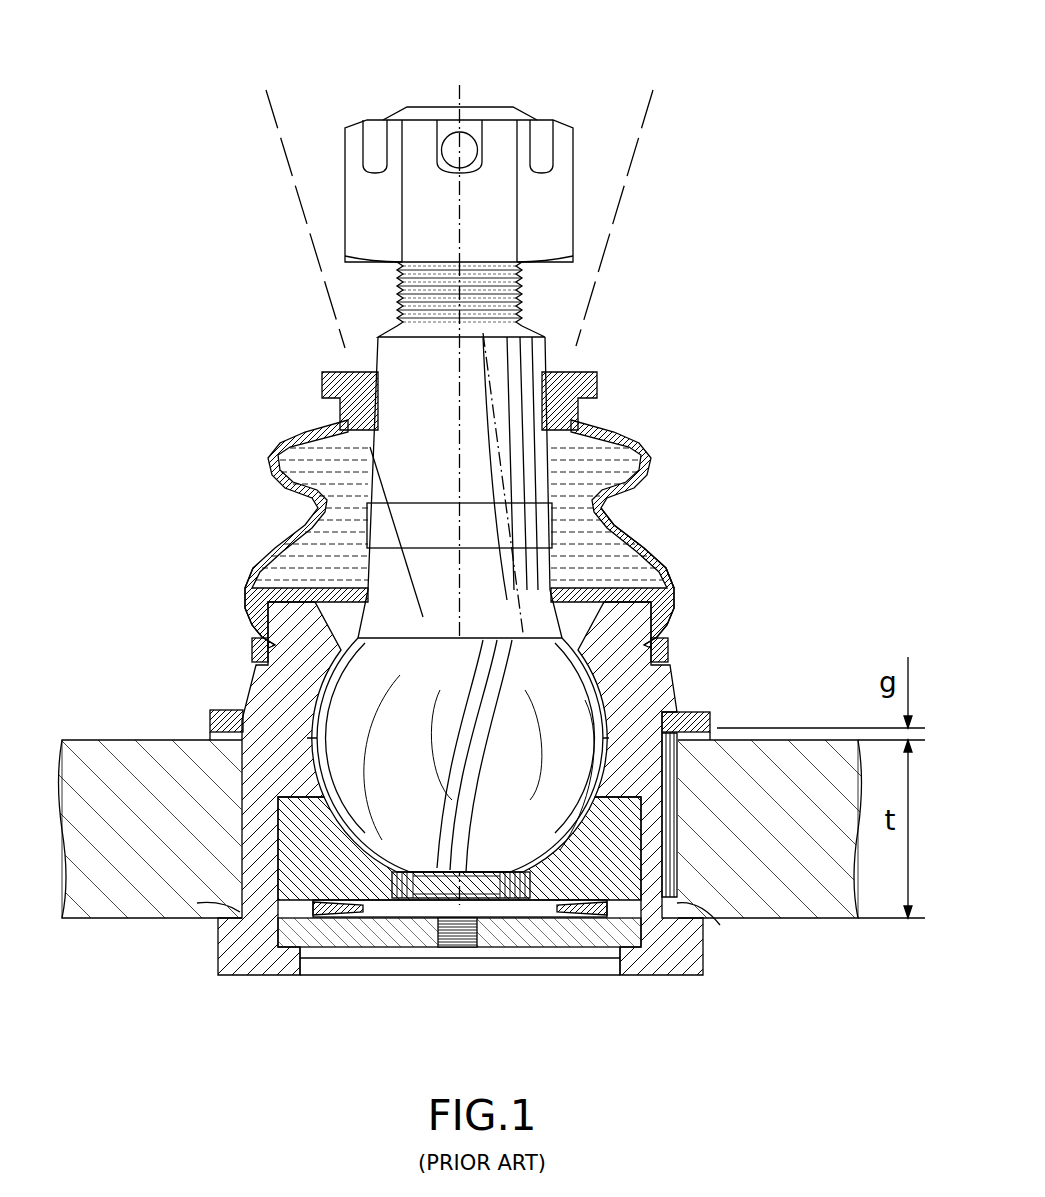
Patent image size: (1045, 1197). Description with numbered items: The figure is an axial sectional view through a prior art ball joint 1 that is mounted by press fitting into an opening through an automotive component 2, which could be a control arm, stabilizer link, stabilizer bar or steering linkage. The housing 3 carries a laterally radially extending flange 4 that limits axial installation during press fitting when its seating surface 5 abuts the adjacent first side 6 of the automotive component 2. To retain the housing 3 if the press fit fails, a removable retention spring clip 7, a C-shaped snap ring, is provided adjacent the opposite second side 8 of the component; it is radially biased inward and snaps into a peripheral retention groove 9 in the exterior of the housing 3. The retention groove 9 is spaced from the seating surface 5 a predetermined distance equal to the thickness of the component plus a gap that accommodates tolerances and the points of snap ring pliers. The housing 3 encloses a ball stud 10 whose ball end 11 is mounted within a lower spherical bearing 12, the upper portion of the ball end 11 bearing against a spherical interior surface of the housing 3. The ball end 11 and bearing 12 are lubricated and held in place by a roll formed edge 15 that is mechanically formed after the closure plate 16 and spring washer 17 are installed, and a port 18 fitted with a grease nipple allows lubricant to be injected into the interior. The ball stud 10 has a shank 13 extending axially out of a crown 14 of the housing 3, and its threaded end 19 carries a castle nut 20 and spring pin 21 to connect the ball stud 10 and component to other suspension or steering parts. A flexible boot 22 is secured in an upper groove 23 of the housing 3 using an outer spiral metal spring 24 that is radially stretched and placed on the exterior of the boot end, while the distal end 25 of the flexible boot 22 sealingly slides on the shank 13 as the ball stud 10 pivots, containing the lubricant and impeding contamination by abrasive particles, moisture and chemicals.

The ball joint 1 is at (707, 552).
The automotive component 2 is at (104, 736).
The housing 3 is at (672, 680).
The flange 4 is at (217, 935).
The seating surface 5 is at (197, 903).
The first side 6 is at (812, 918).
The retention spring clip 7 is at (210, 712).
The second side 8 is at (162, 738).
The retention groove 9 is at (263, 720).
The ball stud 10 is at (553, 331).
The ball end 11 is at (502, 787).
The lower spherical bearing 12 is at (357, 860).
The shank 13 is at (508, 430).
The crown 14 is at (642, 580).
The roll formed edge 15 is at (300, 973).
The closure plate 16 is at (417, 948).
The spring washer 17 is at (337, 914).
The port 18 is at (463, 948).
The threaded end 19 is at (517, 112).
The castle nut 20 is at (573, 133).
The spring pin 21 is at (452, 136).
The flexible boot 22 is at (268, 460).
The upper groove 23 is at (258, 598).
The outer spiral metal spring 24 is at (252, 645).
The distal end 25 is at (600, 383).